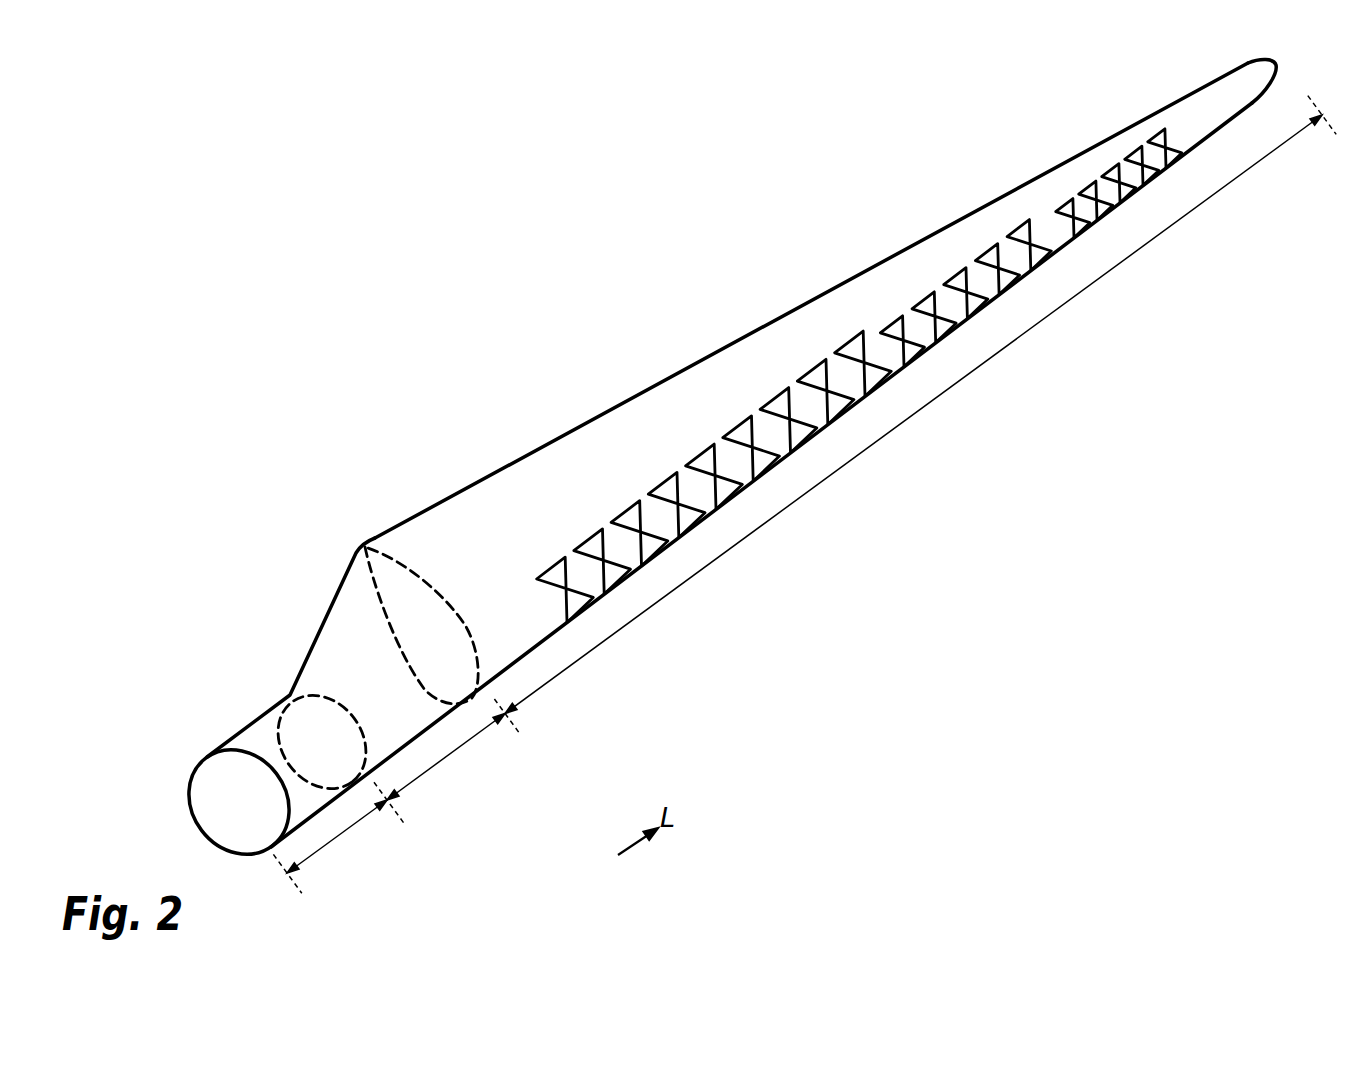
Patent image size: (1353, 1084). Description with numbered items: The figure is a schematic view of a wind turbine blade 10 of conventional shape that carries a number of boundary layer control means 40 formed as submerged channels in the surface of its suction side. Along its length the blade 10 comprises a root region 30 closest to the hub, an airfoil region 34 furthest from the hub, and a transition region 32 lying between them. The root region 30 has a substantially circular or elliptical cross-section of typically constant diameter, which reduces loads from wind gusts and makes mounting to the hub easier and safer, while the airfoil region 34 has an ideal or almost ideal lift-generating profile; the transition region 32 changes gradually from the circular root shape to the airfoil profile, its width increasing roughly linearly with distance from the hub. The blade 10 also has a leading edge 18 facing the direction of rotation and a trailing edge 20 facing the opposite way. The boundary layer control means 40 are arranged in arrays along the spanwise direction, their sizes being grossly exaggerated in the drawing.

The wind turbine blade 10 is at (722, 466).
The leading edge 18 is at (948, 340).
The trailing edge 20 is at (955, 222).
The root region 30 is at (337, 837).
The transition region 32 is at (447, 757).
The airfoil region 34 is at (838, 472).
The boundary layer control means 40 is at (575, 608).